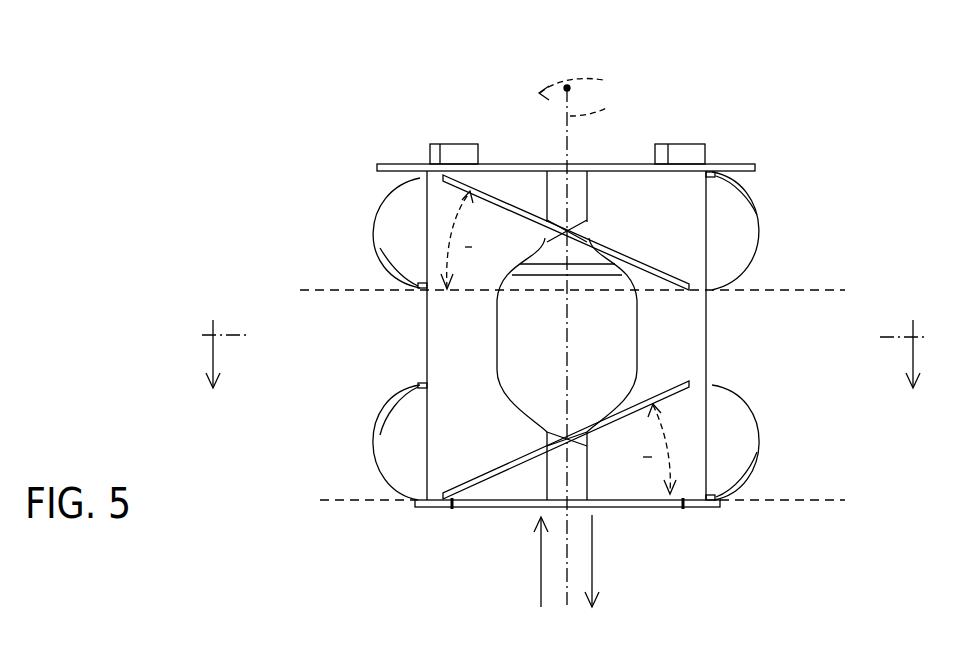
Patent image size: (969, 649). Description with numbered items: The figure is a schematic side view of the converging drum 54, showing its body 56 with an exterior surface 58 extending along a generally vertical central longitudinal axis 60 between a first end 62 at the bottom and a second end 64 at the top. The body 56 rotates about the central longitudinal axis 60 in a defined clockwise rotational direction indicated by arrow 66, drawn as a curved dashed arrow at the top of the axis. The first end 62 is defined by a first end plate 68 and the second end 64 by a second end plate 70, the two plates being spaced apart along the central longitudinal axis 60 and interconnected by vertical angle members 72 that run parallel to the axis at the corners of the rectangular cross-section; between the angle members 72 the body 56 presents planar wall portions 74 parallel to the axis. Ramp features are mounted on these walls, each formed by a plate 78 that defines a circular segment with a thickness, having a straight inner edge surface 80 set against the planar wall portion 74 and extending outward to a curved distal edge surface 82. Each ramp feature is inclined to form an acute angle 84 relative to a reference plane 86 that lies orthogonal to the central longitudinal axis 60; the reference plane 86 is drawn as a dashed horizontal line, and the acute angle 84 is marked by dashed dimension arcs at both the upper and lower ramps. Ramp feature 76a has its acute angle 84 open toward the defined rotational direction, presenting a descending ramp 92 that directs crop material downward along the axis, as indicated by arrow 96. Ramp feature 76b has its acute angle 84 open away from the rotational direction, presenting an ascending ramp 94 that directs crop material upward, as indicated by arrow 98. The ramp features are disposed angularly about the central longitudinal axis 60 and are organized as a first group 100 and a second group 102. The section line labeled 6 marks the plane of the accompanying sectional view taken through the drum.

The converging drum 54 is at (263, 57).
The body 56 is at (707, 325).
The exterior surface 58 is at (490, 428).
The central longitudinal axis 60 is at (608, 108).
The first end 62 is at (667, 510).
The second end 64 is at (593, 165).
The arrow 66 is at (603, 80).
The first end plate 68 is at (418, 502).
The second end plate 70 is at (738, 164).
The angle member 72 is at (428, 348).
The planar wall portion 74 is at (427, 325).
The ramp feature 76a is at (387, 200).
The ramp feature 76b is at (380, 437).
The plate 78 is at (745, 238).
The inner edge surface 80 is at (704, 195).
The curved distal edge surface 82 is at (750, 262).
The acute angle 84 is at (558, 342).
The reference plane 86 is at (330, 290).
The descending ramp 92 is at (497, 180).
The ascending ramp 94 is at (378, 418).
The arrow 96 is at (592, 555).
The arrow 98 is at (541, 560).
The first group 100 is at (607, 168).
The second group 102 is at (395, 458).
The section line 6- 6 is at (564, 339).